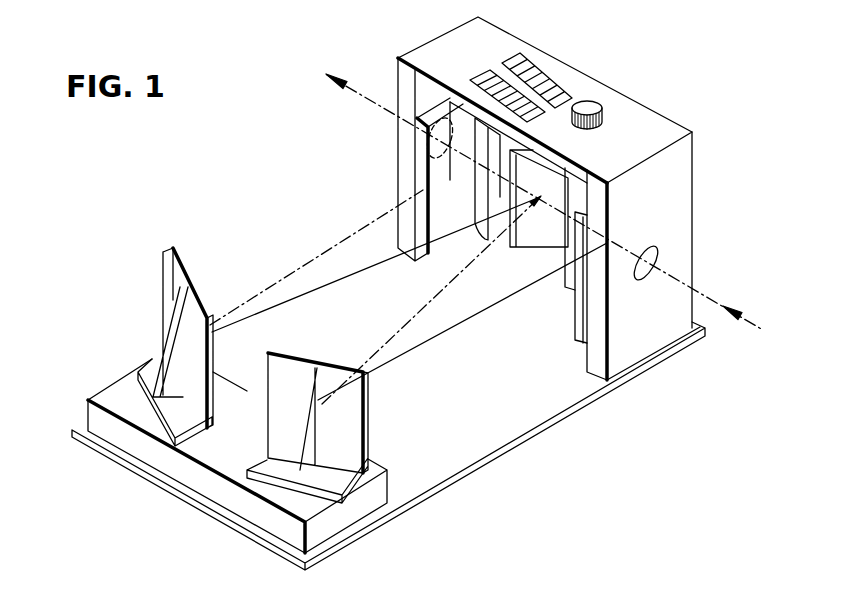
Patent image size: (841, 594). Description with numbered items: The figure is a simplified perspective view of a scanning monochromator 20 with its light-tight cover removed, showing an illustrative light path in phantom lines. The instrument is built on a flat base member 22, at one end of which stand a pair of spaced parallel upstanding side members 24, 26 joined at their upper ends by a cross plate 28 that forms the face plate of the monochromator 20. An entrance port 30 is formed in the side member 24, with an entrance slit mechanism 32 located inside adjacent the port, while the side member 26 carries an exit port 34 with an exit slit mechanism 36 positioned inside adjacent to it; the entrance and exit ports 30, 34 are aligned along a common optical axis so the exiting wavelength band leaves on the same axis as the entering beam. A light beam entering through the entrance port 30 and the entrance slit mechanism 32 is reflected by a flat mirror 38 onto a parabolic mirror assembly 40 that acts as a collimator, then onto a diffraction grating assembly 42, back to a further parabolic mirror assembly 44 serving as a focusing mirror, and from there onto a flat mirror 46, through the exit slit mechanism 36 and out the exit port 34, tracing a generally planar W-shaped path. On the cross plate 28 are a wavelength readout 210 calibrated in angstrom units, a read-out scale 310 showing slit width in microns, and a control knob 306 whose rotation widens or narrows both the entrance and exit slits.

The scanning monochromator 20 is at (305, 228).
The flat base member 22 is at (515, 428).
The side member 24 is at (680, 210).
The side member 26 is at (408, 88).
The cross plate 28 is at (643, 117).
The entrance port 30 is at (646, 281).
The entrance slit mechanism 32 is at (572, 324).
The exit port 34 is at (432, 150).
The exit slit mechanism 36 is at (420, 190).
The flat mirror 38 is at (576, 193).
The parabolic mirror assembly 40 is at (380, 419).
The diffraction grating assembly 42 is at (535, 253).
The parabolic mirror assembly 44 is at (155, 325).
The flat mirror 46 is at (480, 148).
The readout 210 is at (483, 80).
The read-out scale 310 is at (533, 78).
The control knob 306 is at (590, 105).